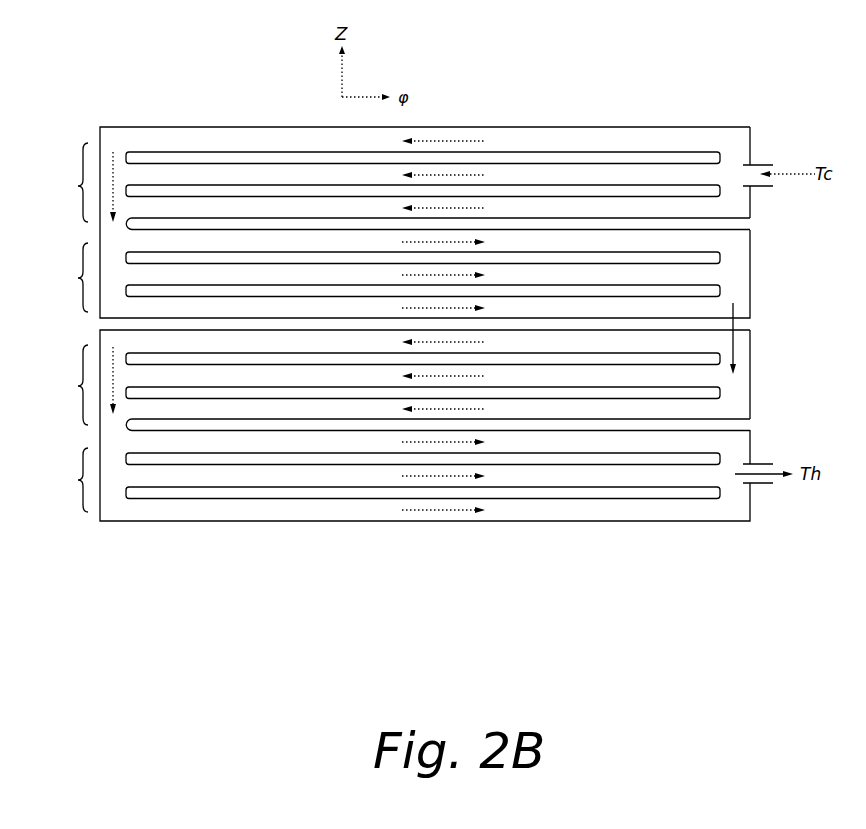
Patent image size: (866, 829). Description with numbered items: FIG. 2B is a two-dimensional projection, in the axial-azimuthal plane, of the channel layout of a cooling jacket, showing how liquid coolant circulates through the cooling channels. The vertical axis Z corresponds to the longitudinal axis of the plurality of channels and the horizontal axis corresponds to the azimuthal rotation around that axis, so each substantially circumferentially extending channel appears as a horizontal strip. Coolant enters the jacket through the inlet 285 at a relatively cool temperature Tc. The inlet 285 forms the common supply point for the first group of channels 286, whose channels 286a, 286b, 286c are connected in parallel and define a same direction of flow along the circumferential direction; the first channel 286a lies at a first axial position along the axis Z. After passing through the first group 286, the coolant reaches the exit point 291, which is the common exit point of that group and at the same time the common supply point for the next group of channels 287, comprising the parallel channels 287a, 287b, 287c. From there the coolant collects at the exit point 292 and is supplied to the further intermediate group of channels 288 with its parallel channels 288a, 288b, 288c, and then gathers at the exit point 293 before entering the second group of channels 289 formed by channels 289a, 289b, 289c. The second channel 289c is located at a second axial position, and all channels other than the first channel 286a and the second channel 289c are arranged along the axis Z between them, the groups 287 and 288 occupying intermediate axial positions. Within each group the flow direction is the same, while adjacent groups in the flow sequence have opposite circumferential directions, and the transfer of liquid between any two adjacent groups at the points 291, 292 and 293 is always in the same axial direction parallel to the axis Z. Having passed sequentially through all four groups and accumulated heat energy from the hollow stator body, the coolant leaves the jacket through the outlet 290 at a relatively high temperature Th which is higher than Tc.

The inlet 285 is at (756, 172).
The first group of channels 286 is at (78, 186).
The first channel 286a is at (503, 145).
The channel 286b is at (578, 175).
The channel 286c is at (645, 210).
The intermediate group of channels 287 is at (78, 278).
The channel 287a is at (705, 243).
The channel 287b is at (710, 275).
The channel 287c is at (705, 308).
The intermediate group of channels 288 is at (78, 386).
The channel 288a is at (705, 345).
The channel 288b is at (705, 380).
The channel 288c is at (705, 412).
The second group of channels 289 is at (78, 480).
The channel 289a is at (252, 440).
The channel 289b is at (530, 475).
The second channel 289c is at (335, 507).
The outlet 290 is at (762, 480).
The exit point 291 is at (118, 240).
The exit point 292 is at (740, 322).
The exit point 293 is at (118, 440).